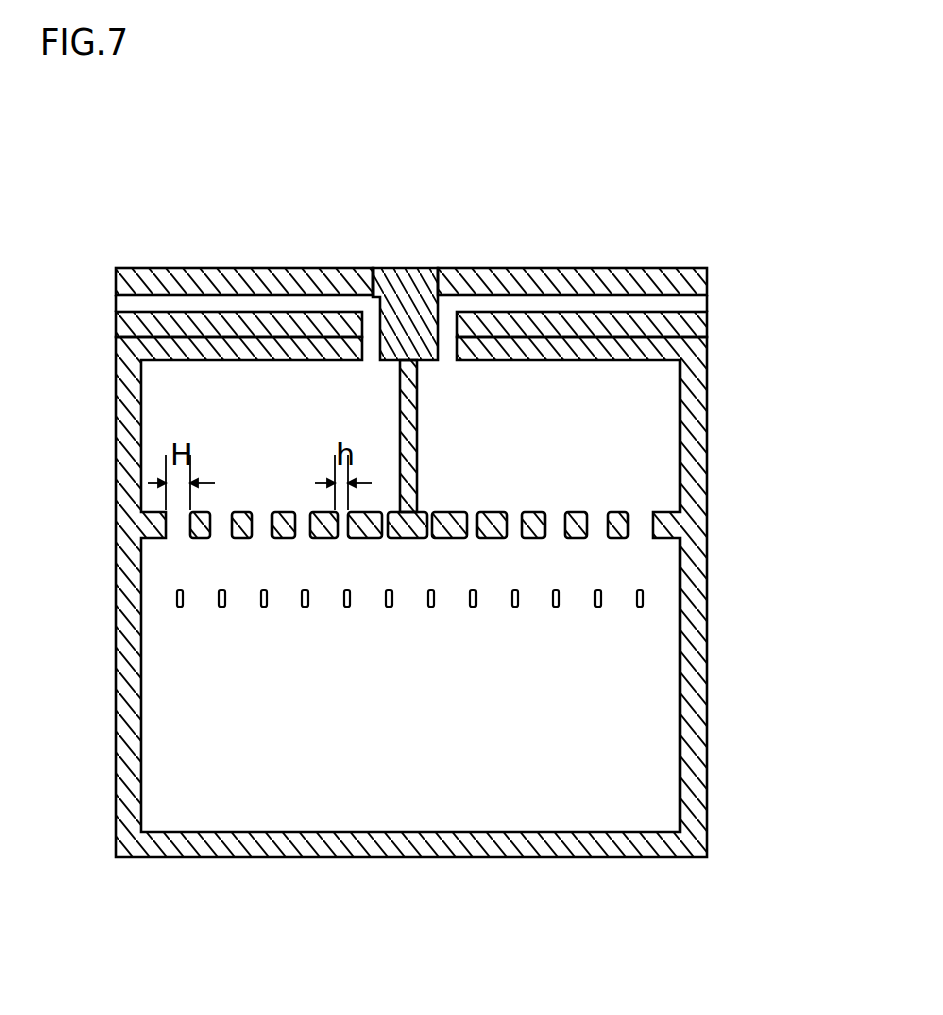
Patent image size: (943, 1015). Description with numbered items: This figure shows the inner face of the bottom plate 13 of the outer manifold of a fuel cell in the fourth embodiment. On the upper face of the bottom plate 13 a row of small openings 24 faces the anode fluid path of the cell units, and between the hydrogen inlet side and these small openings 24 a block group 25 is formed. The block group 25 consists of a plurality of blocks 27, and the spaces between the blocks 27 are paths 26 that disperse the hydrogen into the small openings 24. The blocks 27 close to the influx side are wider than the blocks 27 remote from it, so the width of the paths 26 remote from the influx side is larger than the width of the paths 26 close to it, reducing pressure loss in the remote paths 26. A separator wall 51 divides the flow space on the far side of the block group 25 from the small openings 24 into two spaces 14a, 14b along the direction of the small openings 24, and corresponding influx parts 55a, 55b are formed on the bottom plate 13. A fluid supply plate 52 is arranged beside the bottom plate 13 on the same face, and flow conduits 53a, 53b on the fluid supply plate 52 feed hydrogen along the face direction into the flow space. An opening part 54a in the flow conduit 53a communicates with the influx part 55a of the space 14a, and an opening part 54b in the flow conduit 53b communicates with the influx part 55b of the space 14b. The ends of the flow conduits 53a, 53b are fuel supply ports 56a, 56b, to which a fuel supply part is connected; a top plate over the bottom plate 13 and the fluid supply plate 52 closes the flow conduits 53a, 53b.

The bottom plate 13 is at (706, 758).
The space 14a is at (157, 400).
The space 14b is at (650, 447).
The small openings 24 is at (257, 600).
The block group 25 is at (480, 473).
The paths 26 is at (178, 528).
The blocks 27 is at (277, 540).
The separator wall 51 is at (420, 415).
The fluid supply plate 52 is at (398, 268).
The flow conduit 53a is at (210, 268).
The flow conduit 53b is at (577, 298).
The opening part 54a is at (375, 348).
The opening part 54b is at (448, 335).
The influx part 55a is at (366, 330).
The influx part 55b is at (470, 313).
The fuel supply port 56a is at (117, 303).
The fuel supply port 56b is at (708, 300).